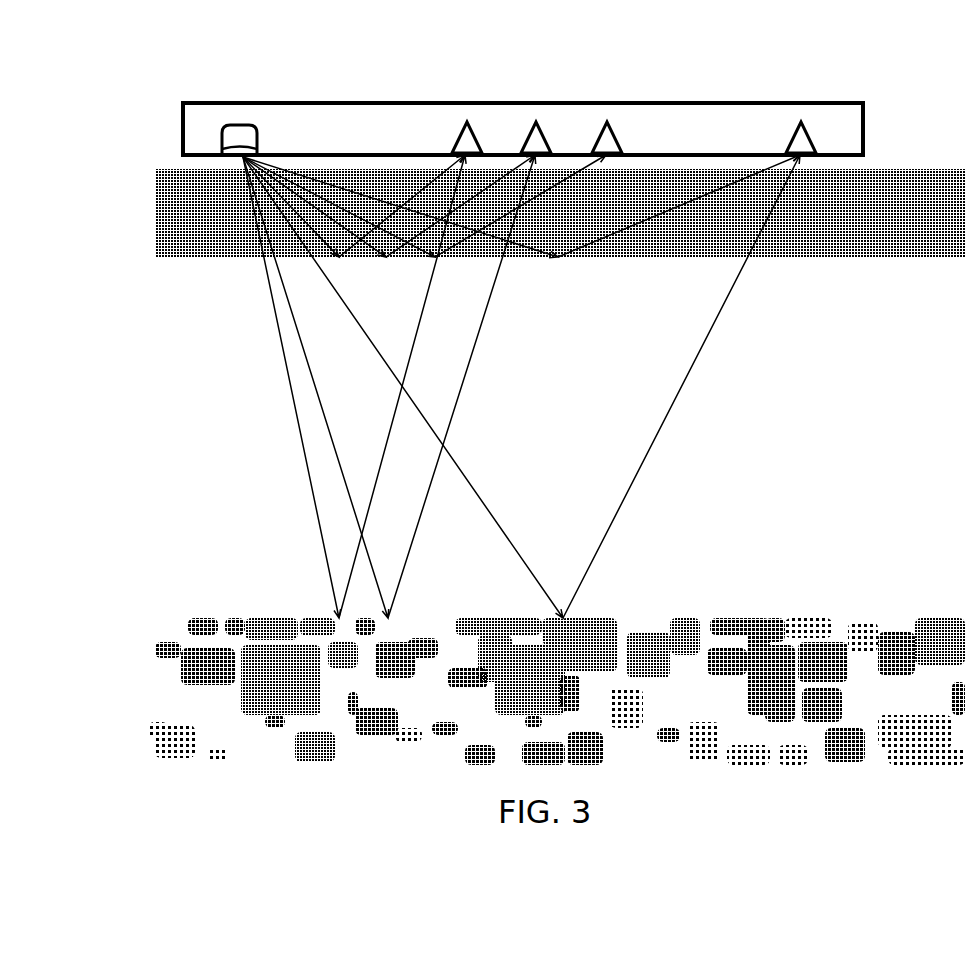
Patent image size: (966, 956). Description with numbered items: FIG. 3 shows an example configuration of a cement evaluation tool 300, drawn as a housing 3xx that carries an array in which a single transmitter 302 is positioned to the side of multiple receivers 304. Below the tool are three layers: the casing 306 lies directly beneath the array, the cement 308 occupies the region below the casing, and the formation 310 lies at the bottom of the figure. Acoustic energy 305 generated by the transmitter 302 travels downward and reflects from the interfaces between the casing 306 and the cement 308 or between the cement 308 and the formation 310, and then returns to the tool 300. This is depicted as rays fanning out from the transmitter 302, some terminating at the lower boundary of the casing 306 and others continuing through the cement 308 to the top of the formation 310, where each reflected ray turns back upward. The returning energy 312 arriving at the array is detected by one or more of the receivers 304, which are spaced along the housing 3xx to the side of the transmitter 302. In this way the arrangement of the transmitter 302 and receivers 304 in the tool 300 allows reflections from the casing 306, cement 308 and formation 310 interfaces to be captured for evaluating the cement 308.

The cement evaluation tool 300 is at (176, 68).
The housing 3xx is at (941, 127).
The transmitter 302 is at (238, 135).
The receivers 304 is at (541, 126).
The acoustic energy 305 is at (278, 331).
The casing 306 is at (941, 227).
The cement 308 is at (942, 441).
The formation 310 is at (942, 692).
The returning energy 312 is at (480, 332).